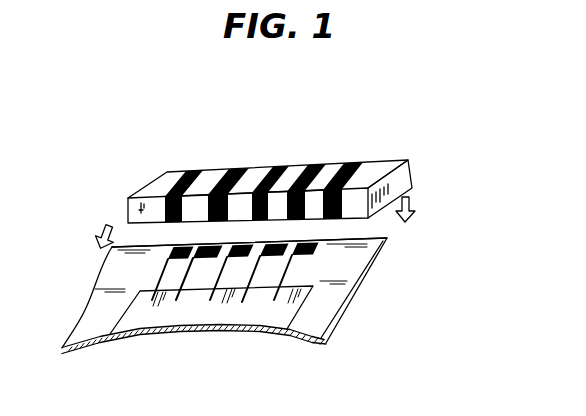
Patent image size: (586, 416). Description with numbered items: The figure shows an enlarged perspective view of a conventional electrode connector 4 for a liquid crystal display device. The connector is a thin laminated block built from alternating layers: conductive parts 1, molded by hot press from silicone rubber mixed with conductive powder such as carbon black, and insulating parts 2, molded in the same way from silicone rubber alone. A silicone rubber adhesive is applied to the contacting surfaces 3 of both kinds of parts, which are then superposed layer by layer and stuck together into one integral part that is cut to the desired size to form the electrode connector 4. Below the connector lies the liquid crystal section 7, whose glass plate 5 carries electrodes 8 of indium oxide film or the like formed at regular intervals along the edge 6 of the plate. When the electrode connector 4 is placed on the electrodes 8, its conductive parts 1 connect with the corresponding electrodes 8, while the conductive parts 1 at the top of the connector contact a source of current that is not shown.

The conductive parts 1 is at (187, 180).
The insulating parts 2 is at (217, 178).
The contacting surfaces 3 is at (313, 170).
The electrode connector 4 is at (272, 157).
The glass plate 5 is at (352, 280).
The edge 6 is at (368, 232).
The liquid crystal section 7 is at (228, 312).
The electrodes 8 is at (165, 258).